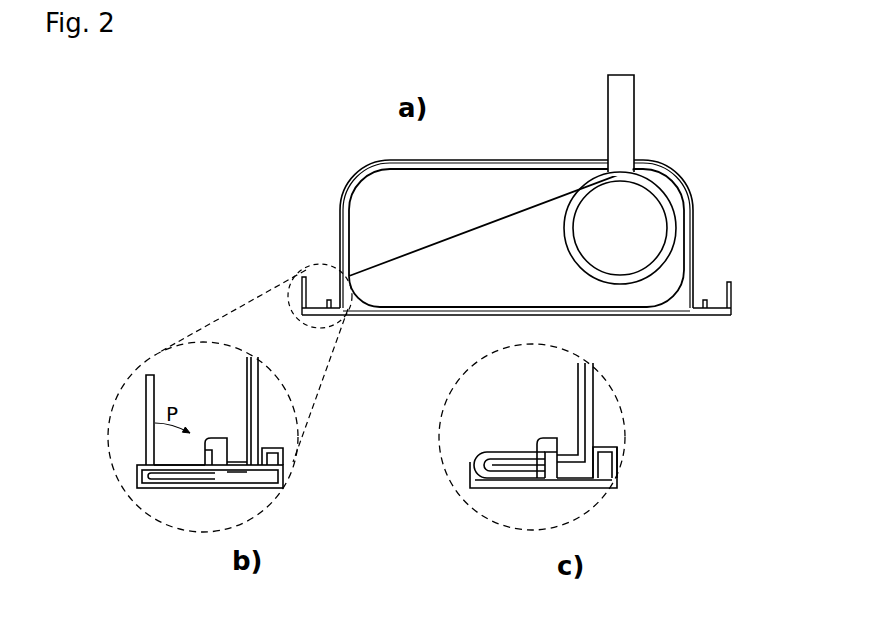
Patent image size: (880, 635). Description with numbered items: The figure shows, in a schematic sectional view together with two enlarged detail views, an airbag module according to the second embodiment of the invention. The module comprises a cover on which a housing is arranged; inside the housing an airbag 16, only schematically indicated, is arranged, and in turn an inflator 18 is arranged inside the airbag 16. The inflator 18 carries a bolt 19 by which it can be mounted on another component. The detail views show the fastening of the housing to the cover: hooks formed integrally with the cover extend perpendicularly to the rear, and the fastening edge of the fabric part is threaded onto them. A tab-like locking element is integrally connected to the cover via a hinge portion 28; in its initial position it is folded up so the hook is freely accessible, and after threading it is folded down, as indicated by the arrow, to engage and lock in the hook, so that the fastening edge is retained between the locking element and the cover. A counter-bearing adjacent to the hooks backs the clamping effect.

The airbag 16 is at (676, 268).
The inflator 18 is at (643, 203).
The bolt 19 is at (620, 83).
The hinge portion 28 is at (146, 460).